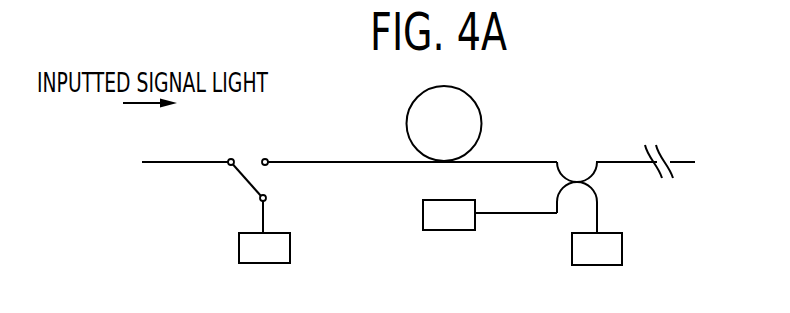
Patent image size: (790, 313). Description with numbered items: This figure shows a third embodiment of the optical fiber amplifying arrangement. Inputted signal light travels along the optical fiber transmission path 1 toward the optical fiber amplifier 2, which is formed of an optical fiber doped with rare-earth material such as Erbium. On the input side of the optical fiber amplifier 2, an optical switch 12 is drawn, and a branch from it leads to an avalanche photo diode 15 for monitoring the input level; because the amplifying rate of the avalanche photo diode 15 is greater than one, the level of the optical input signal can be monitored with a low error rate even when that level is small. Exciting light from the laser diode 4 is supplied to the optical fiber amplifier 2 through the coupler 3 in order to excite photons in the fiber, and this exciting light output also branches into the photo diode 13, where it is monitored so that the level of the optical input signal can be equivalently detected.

The optical fiber transmission path 1 is at (335, 163).
The optical fiber amplifier 2 is at (482, 115).
The coupler 3 is at (598, 170).
The laser diode 4 is at (622, 248).
The optical switch 12 is at (238, 177).
The photo diode 13 is at (423, 207).
The avalanche photo diode 15 is at (290, 245).